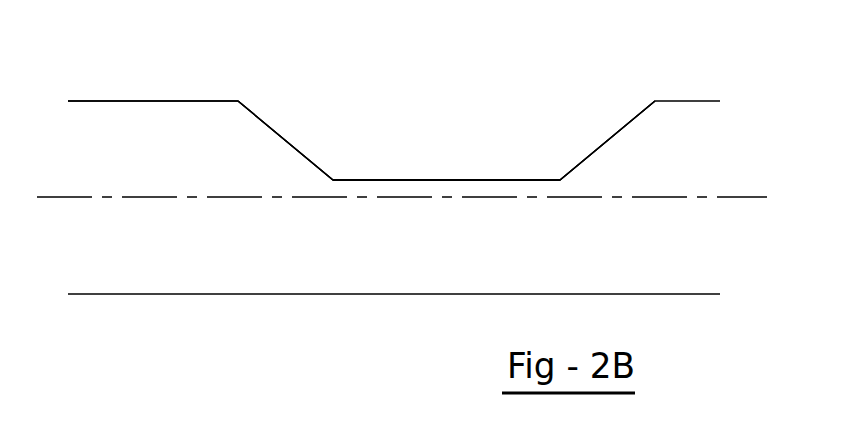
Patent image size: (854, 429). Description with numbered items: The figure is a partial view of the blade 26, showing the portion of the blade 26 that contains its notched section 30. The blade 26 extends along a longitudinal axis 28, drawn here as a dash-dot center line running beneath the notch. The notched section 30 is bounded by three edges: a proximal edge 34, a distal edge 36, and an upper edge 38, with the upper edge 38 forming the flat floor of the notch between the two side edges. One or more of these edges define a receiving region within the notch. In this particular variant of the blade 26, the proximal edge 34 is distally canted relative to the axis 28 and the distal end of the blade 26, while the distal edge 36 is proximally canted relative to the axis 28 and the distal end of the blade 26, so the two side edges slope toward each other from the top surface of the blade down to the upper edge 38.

The blade 26 is at (691, 94).
The longitudinal axis 28 is at (163, 197).
The notched section 30 is at (498, 74).
The proximal edge 34 is at (293, 147).
The distal edge 36 is at (612, 133).
The upper edge 38 is at (409, 180).